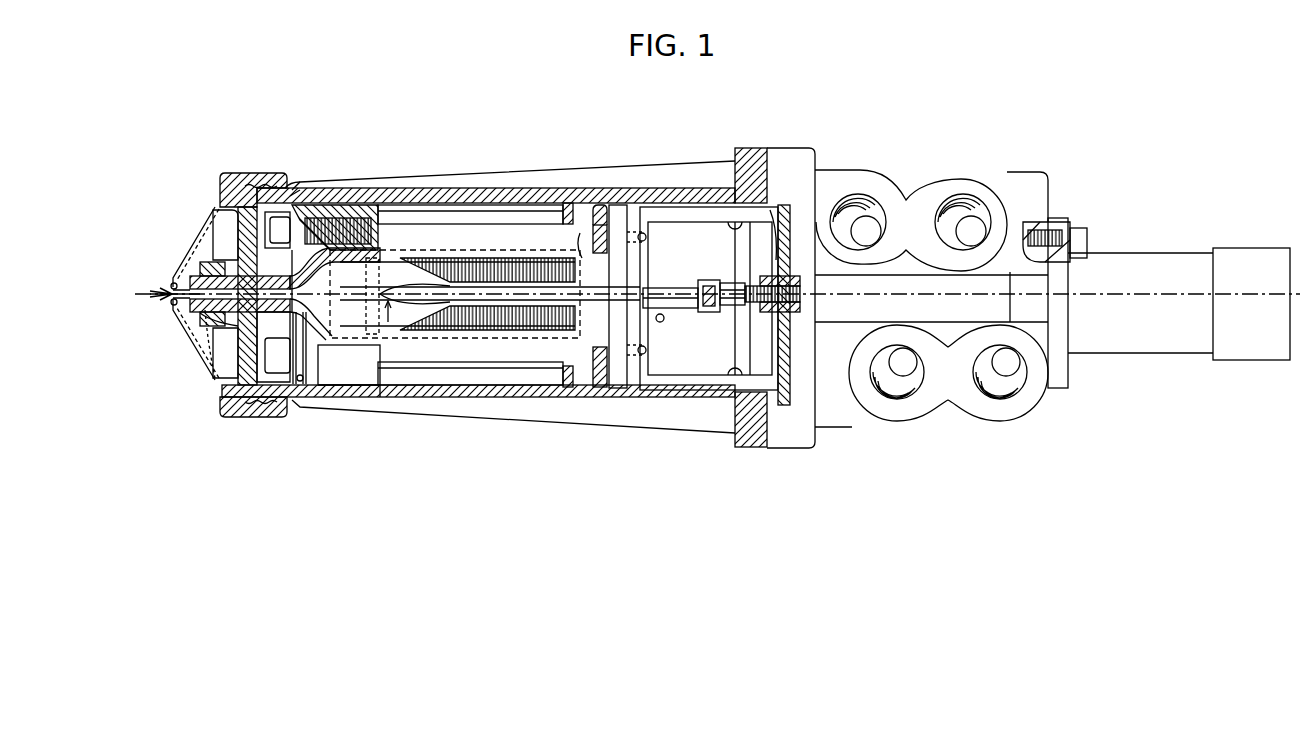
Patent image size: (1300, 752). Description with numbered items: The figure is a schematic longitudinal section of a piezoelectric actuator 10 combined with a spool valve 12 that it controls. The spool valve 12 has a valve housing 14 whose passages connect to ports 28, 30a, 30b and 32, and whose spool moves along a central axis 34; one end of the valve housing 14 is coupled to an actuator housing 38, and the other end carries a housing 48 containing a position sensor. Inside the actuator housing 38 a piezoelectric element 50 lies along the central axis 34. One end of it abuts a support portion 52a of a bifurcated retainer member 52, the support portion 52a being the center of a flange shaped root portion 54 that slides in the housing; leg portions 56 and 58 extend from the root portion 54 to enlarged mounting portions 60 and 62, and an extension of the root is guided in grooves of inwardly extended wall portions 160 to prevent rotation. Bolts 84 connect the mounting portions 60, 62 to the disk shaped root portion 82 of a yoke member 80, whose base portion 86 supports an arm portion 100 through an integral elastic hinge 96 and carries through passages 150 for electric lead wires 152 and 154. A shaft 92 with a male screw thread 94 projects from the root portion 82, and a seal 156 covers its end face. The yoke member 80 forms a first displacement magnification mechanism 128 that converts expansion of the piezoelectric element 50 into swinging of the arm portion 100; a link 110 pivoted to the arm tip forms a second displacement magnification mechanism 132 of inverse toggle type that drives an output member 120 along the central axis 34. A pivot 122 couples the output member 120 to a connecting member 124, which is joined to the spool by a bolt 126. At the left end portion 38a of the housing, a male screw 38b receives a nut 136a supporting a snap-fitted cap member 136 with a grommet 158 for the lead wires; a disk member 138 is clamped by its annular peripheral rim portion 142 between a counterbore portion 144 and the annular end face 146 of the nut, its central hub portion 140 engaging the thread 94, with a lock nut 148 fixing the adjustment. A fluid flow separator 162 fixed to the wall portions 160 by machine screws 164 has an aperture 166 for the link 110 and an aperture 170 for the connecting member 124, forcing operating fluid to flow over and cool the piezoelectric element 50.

The piezoelectric actuator 10 is at (558, 163).
The spool valve 12 is at (990, 168).
The valve housing 14 is at (912, 198).
The port 28 is at (902, 398).
The port 30a is at (858, 205).
The port 30b is at (962, 205).
The port 32 is at (1002, 398).
The central axis 34 is at (1126, 298).
The actuator housing 38 is at (428, 190).
The left end portion of the housing 38a is at (292, 188).
The male screw 38b is at (285, 186).
The housing 48 is at (1114, 260).
The piezoelectric element 50 is at (475, 328).
The retainer member 52 is at (612, 388).
The support portion 52a is at (595, 292).
The root portion 54 is at (590, 215).
The leg portion 56 is at (468, 226).
The leg portion 58 is at (465, 390).
The mounting portion 60 is at (362, 205).
The mounting portion 62 is at (354, 390).
The yoke member 80 is at (455, 278).
The root portion 82 is at (316, 392).
The bolt 84 is at (295, 212).
The base portion 86 is at (354, 325).
The shaft 92 is at (232, 260).
The male screw thread 94 is at (210, 278).
The integral elastic hinge 96 is at (370, 281).
The arm portion 100 is at (498, 292).
The link 110 is at (662, 288).
The output member 120 is at (705, 280).
The pivot 122 is at (722, 306).
The connecting member 124 is at (792, 312).
The bolt 126 is at (795, 284).
The first displacement magnification mechanism 128 is at (401, 331).
The second displacement magnification mechanism 132 is at (690, 338).
The cap member 136 is at (212, 216).
The nut 136a is at (232, 417).
The disk member 138 is at (245, 332).
The central hub portion 140 is at (225, 333).
The annular peripheral rim portion 142 is at (235, 173).
The counterbore portion 144 is at (268, 186).
The annular end face 146 is at (240, 178).
The lock nut 148 is at (205, 310).
The through passage 150 is at (318, 316).
The electric lead wire 152 is at (516, 250).
The electric lead wire 154 is at (513, 340).
The seal 156 is at (176, 283).
The grommet 158 is at (170, 292).
The inwardly extended wall portion 160 is at (661, 188).
The fluid flow separator 162 is at (676, 400).
The machine screw 164 is at (655, 342).
The aperture 166 is at (670, 329).
The aperture 170 is at (765, 272).